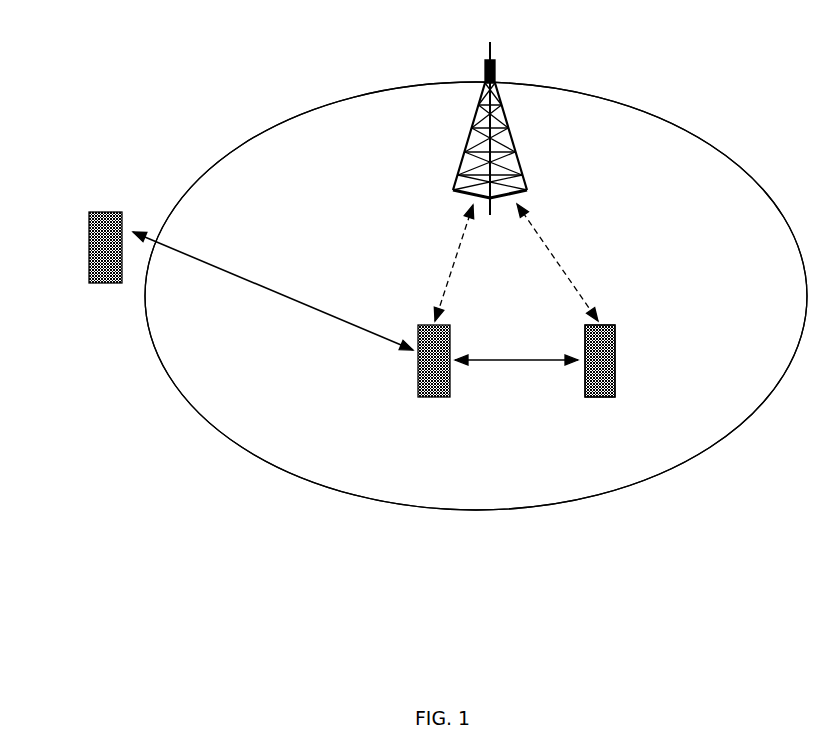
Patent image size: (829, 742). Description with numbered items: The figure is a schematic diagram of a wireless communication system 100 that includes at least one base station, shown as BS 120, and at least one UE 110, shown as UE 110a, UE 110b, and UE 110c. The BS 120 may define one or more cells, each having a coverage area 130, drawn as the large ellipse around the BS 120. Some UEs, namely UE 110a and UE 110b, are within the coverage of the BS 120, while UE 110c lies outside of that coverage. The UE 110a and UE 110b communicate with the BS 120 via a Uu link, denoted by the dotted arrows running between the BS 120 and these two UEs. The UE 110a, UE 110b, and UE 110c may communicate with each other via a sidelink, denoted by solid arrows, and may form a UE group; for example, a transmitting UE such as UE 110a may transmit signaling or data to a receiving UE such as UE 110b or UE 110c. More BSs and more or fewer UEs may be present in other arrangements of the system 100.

The wireless communication system 100 is at (680, 98).
The coverage area 130 is at (225, 140).
The base station 120 is at (445, 170).
The UE 110 is at (645, 347).
The UE 110a is at (425, 412).
The UE 110b is at (601, 412).
The UE 110c is at (105, 300).